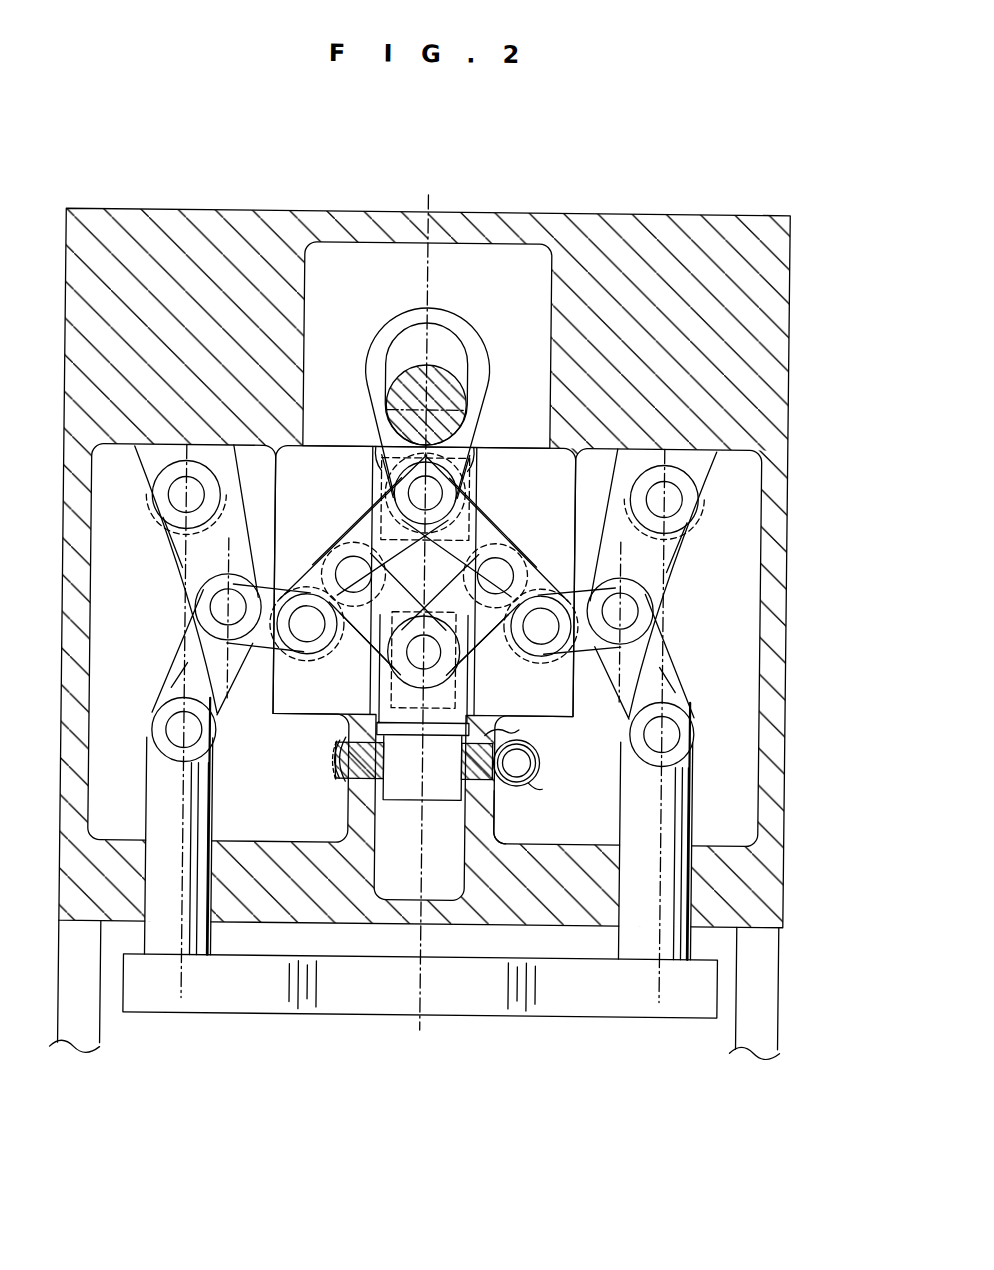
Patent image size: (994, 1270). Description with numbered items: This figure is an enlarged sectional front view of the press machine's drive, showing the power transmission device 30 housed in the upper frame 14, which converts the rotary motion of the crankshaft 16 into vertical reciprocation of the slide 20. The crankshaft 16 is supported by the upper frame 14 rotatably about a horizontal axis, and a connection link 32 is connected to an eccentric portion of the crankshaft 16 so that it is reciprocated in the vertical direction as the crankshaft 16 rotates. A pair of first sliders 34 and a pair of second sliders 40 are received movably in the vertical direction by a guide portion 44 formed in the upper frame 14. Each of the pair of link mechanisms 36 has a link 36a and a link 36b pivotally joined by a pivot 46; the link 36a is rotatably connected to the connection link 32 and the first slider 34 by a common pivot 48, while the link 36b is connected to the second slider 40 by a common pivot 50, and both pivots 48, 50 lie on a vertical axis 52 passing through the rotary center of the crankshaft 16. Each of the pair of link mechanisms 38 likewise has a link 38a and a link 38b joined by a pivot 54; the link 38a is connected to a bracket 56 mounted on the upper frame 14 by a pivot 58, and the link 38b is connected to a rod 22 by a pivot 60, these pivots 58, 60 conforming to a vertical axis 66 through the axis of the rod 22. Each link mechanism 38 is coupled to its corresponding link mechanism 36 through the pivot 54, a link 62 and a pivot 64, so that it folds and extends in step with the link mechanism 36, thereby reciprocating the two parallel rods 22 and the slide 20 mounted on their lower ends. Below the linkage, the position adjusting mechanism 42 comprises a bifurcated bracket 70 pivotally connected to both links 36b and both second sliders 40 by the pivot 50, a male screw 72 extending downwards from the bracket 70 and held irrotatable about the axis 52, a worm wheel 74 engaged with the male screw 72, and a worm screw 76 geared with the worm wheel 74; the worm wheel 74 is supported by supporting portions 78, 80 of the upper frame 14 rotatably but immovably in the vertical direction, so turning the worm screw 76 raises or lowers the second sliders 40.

The upper frame 14 is at (650, 226).
The crankshaft 16 is at (455, 385).
The slide 20 is at (478, 1012).
The rods 22 is at (155, 800).
The power transmission device 30 is at (740, 494).
The connection link 32 is at (374, 346).
The first sliders 34 is at (470, 426).
The link mechanisms 36 is at (337, 558).
The link 36a is at (364, 523).
The link 36b is at (352, 640).
The link mechanisms 38 is at (180, 580).
The link 38a is at (170, 549).
The link 38b is at (167, 690).
The second sliders 40 is at (338, 740).
The position adjusting mechanism 42 is at (536, 784).
The guide portion 44 is at (374, 456).
The pivot 46 is at (424, 519).
The common pivot 48 is at (378, 430).
The common pivot 50 is at (432, 690).
The axis 52 is at (432, 288).
The pivot 54 is at (218, 640).
The bracket 56 is at (170, 440).
The pivot 58 is at (195, 480).
The pivot 60 is at (153, 732).
The link 62 is at (248, 655).
The pivot 64 is at (307, 608).
The axis 66 is at (188, 950).
The bifurcated bracket 70 is at (340, 760).
The male screw 72 is at (407, 790).
The worm wheel 74 is at (345, 790).
The worm screw 76 is at (540, 762).
The supporting portion 78 is at (492, 831).
The supporting portion 80 is at (520, 732).